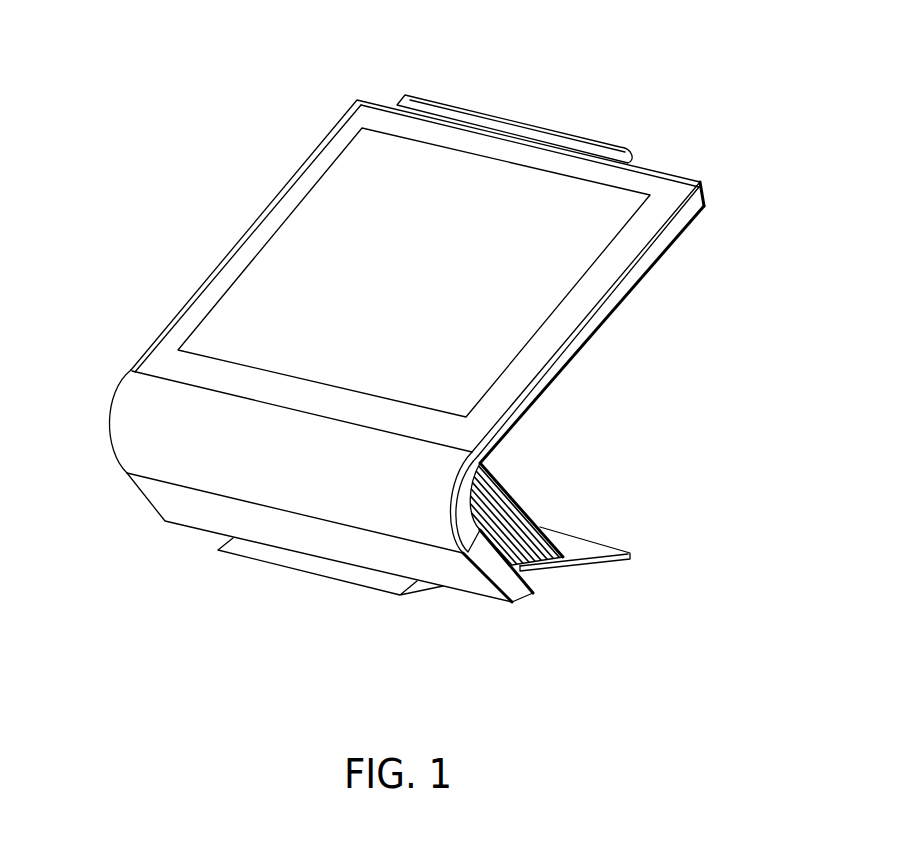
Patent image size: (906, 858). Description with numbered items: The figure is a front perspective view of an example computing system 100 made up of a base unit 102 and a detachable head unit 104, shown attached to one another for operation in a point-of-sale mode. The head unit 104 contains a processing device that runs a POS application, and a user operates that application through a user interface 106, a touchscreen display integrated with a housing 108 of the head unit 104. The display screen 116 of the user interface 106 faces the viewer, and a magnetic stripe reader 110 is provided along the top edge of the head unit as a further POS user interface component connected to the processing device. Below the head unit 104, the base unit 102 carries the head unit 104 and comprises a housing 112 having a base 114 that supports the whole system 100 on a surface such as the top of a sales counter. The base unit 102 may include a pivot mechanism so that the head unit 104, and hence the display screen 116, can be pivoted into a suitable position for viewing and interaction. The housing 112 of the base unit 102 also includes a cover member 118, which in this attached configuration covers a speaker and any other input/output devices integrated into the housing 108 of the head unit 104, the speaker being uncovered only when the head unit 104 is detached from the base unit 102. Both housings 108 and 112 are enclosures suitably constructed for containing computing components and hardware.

The computing system 100 is at (118, 148).
The base unit 102 is at (157, 517).
The head unit 104 is at (706, 182).
The user interface 106 is at (227, 275).
The housing 108 is at (357, 98).
The magnetic stripe reader 110 is at (630, 155).
The housing 112 is at (512, 602).
The base 114 is at (590, 533).
The display screen 116 is at (553, 314).
The cover member 118 is at (108, 416).